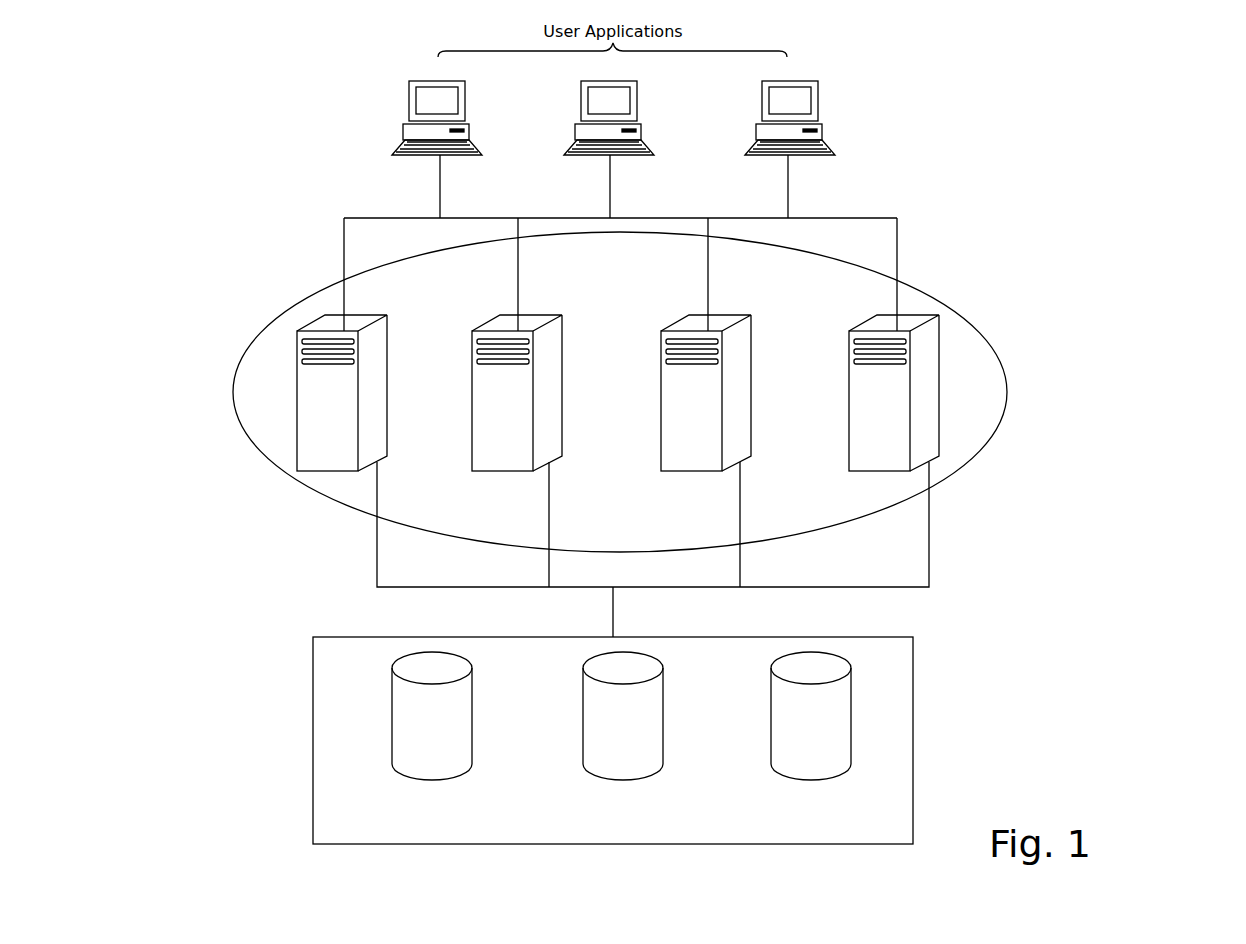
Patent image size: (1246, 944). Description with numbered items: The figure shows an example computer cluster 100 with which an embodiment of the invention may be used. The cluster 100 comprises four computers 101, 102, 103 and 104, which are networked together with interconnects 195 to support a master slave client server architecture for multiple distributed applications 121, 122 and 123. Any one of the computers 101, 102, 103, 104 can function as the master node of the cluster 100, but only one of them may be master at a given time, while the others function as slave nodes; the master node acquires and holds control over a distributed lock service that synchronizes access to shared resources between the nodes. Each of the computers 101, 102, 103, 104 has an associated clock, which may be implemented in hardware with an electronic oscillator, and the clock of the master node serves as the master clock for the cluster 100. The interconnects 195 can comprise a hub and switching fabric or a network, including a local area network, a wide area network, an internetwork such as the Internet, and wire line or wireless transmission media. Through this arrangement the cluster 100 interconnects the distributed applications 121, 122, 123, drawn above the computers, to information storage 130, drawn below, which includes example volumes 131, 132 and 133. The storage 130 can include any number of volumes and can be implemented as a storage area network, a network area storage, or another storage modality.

The computer cluster 100 is at (302, 298).
The computer 101 is at (311, 426).
The computer 102 is at (486, 426).
The computer 103 is at (675, 426).
The computer 104 is at (863, 426).
The distributed application 121 is at (424, 109).
The distributed application 122 is at (596, 109).
The distributed application 123 is at (777, 109).
The information storage 130 is at (664, 813).
The volume 131 is at (416, 731).
The volume 132 is at (607, 731).
The volume 133 is at (795, 731).
The interconnects 195 is at (910, 255).